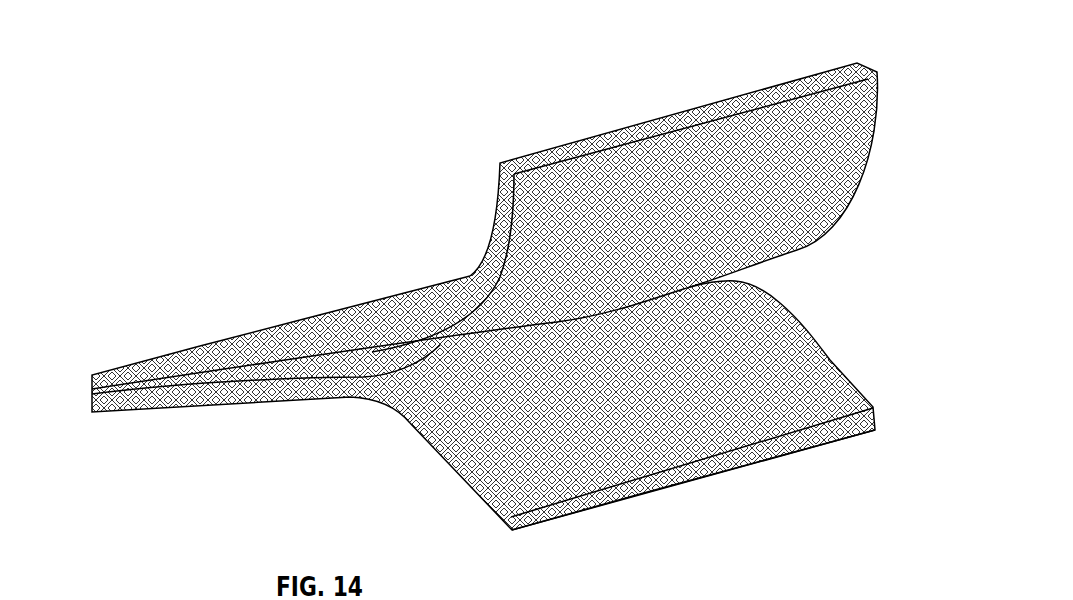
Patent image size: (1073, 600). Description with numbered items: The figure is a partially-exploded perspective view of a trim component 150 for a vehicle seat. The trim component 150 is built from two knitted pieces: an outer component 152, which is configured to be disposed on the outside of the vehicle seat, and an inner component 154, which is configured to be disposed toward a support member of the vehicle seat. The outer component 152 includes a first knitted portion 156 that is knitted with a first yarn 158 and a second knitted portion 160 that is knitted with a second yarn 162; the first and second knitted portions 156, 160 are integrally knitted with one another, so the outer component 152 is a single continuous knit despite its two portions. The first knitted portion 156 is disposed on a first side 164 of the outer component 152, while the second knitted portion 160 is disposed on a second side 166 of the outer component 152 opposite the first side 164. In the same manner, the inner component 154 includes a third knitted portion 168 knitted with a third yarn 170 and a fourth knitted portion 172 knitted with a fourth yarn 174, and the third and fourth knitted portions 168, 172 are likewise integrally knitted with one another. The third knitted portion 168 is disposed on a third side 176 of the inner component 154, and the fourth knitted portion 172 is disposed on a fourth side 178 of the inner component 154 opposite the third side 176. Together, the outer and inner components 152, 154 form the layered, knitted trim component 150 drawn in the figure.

The trim component 150 is at (257, 155).
The outer component 152 is at (135, 379).
The inner component 154 is at (170, 398).
The first knitted portion 156 is at (495, 320).
The first yarn 158 is at (860, 103).
The second knitted portion 160 is at (393, 299).
The second yarn 162 is at (243, 339).
The first side 164 is at (826, 174).
The second side 166 is at (333, 319).
The third knitted portion 168 is at (772, 334).
The third yarn 170 is at (817, 383).
The fourth knitted portion 172 is at (598, 510).
The fourth yarn 174 is at (790, 450).
The third side 176 is at (784, 346).
The fourth side 178 is at (664, 494).